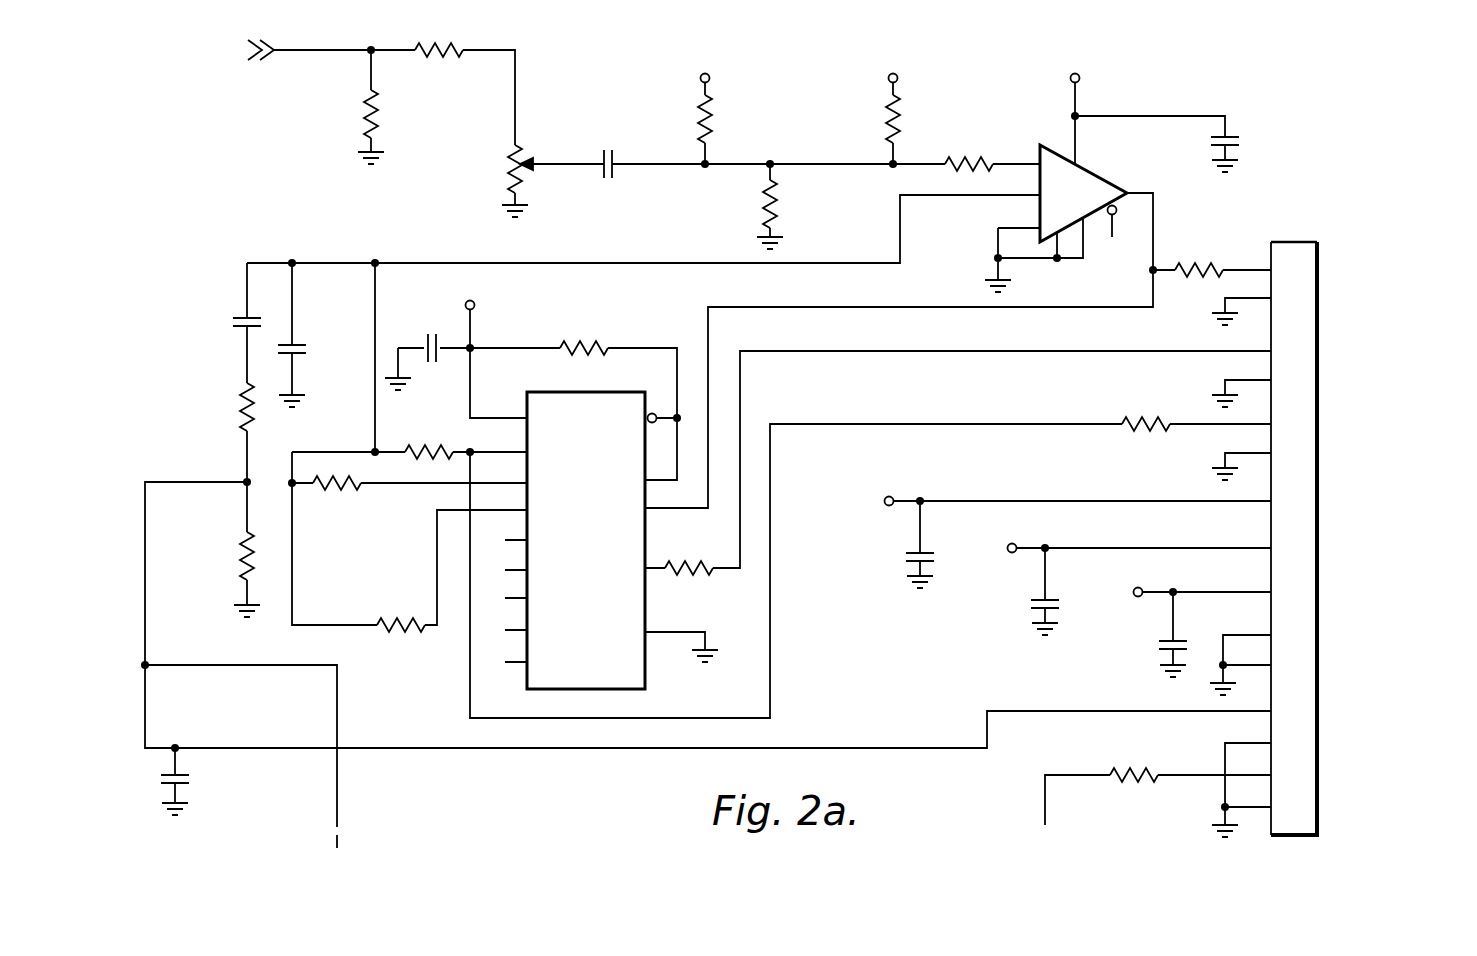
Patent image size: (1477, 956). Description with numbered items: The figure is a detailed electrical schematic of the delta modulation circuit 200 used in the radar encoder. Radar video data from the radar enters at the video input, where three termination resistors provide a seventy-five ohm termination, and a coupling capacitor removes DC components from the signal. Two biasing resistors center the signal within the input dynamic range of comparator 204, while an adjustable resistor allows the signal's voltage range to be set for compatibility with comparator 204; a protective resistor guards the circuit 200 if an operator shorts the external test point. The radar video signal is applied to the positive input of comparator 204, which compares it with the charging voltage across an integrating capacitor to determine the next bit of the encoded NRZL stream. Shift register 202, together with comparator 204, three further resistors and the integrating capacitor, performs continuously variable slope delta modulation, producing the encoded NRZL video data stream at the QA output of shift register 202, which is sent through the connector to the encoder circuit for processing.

The delta modulation circuit 200 is at (795, 429).
The shift register 202 is at (574, 391).
The comparator 204 is at (1090, 172).